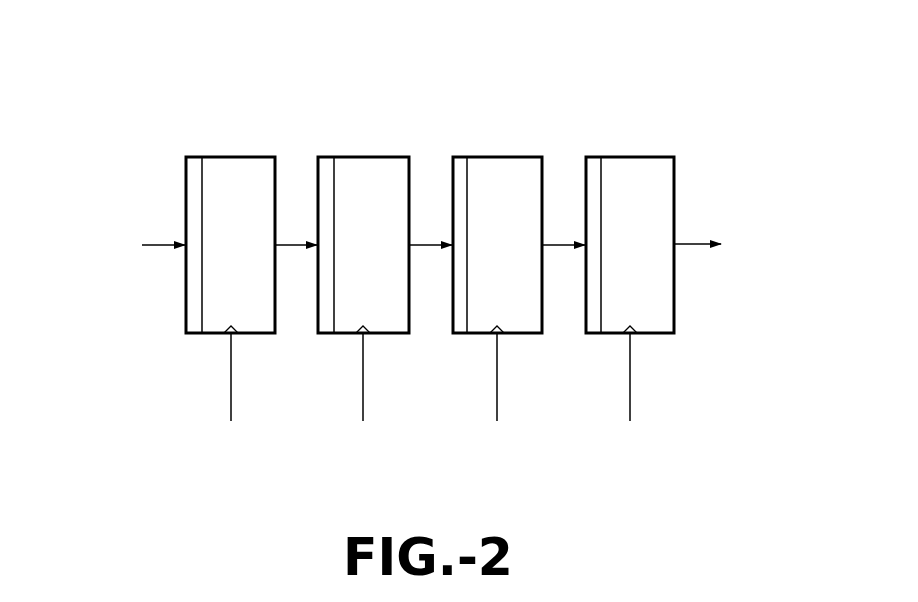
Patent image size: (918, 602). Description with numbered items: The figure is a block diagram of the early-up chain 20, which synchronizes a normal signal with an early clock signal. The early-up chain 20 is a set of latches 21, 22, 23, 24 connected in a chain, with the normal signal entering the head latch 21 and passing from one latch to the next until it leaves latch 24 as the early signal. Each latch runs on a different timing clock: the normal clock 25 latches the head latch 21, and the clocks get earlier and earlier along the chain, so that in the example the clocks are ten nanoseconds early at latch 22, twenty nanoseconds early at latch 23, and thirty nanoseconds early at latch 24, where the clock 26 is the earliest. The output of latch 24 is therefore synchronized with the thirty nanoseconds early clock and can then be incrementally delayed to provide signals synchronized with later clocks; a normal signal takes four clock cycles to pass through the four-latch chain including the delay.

The early-up chain 20 is at (303, 62).
The head latch 21 is at (245, 157).
The latch 22 is at (363, 157).
The latch 23 is at (513, 156).
The latch 24 is at (633, 156).
The normal clock 25 is at (230, 393).
The clock 26 is at (630, 392).